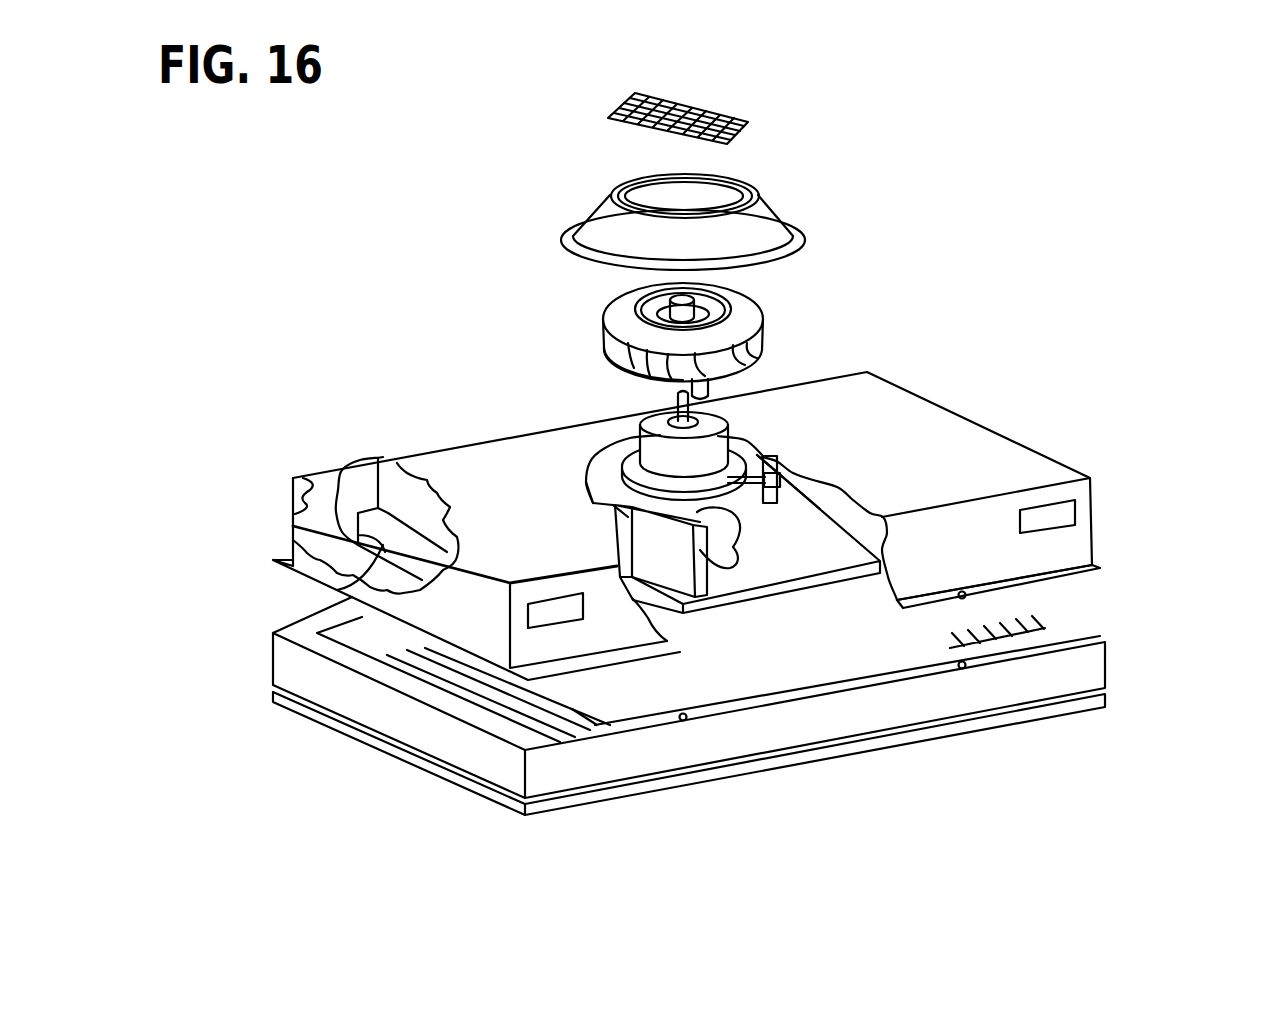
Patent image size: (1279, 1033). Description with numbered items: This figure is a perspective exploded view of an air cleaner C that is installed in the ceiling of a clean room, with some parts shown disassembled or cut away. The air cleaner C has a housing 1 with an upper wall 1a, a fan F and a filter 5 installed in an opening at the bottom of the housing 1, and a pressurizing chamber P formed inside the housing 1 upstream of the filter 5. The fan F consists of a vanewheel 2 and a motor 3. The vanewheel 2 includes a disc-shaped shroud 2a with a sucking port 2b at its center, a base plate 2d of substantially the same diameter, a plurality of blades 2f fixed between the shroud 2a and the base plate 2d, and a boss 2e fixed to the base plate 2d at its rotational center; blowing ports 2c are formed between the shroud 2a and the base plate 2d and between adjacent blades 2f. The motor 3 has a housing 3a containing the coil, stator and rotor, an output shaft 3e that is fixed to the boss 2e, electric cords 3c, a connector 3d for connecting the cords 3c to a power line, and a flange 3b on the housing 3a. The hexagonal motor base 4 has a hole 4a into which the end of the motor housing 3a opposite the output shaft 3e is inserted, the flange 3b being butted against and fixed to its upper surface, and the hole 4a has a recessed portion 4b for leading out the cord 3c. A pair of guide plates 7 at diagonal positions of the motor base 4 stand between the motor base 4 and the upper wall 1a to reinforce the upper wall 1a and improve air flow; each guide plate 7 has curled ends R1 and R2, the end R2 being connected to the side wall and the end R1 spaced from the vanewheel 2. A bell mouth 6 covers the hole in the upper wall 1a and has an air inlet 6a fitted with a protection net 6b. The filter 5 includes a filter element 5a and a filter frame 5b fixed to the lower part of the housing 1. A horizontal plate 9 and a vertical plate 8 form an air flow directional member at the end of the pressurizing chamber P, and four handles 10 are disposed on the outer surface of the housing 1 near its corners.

The housing 1 is at (335, 478).
The upper wall 1a is at (453, 470).
The vanewheel 2 is at (923, 207).
The shroud 2a is at (748, 317).
The sucking port 2b is at (727, 300).
The blowing port 2c is at (767, 335).
The base plate 2d is at (773, 377).
The boss 2e is at (683, 297).
The blade 2f is at (750, 353).
The motor 3 is at (1120, 308).
The motor housing 3a is at (723, 447).
The flange 3b is at (747, 463).
The electric cord 3c is at (770, 457).
The connector 3d is at (781, 478).
The output shaft 3e is at (700, 403).
The motor base 4 is at (880, 557).
The hole 4a is at (767, 528).
The recessed portion 4b is at (728, 538).
The filter 5 is at (305, 755).
The filter element 5a is at (467, 695).
The filter frame 5b is at (467, 758).
The bell mouth 6 is at (733, 225).
The air inlet 6a is at (722, 193).
The protection net 6b is at (733, 113).
The guide plate 7 is at (667, 573).
The vertical plate 8 is at (352, 597).
The horizontal plate 9 is at (415, 470).
The handle 10 is at (1073, 513).
The pressurizing chamber P is at (872, 538).
The curled end of guide plate R1 is at (593, 482).
The curled end of guide plate R2 is at (628, 517).
The fan F is at (1168, 242).
The air cleaner C is at (1213, 138).